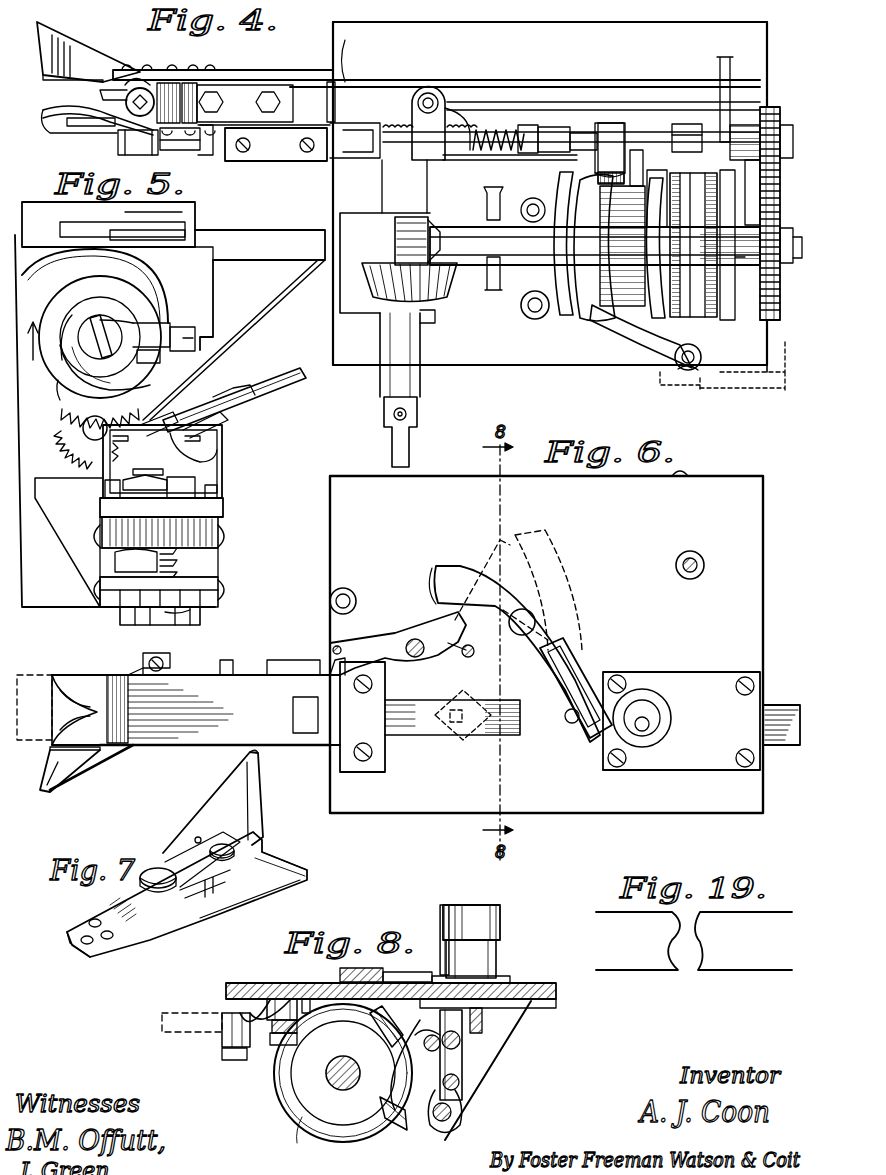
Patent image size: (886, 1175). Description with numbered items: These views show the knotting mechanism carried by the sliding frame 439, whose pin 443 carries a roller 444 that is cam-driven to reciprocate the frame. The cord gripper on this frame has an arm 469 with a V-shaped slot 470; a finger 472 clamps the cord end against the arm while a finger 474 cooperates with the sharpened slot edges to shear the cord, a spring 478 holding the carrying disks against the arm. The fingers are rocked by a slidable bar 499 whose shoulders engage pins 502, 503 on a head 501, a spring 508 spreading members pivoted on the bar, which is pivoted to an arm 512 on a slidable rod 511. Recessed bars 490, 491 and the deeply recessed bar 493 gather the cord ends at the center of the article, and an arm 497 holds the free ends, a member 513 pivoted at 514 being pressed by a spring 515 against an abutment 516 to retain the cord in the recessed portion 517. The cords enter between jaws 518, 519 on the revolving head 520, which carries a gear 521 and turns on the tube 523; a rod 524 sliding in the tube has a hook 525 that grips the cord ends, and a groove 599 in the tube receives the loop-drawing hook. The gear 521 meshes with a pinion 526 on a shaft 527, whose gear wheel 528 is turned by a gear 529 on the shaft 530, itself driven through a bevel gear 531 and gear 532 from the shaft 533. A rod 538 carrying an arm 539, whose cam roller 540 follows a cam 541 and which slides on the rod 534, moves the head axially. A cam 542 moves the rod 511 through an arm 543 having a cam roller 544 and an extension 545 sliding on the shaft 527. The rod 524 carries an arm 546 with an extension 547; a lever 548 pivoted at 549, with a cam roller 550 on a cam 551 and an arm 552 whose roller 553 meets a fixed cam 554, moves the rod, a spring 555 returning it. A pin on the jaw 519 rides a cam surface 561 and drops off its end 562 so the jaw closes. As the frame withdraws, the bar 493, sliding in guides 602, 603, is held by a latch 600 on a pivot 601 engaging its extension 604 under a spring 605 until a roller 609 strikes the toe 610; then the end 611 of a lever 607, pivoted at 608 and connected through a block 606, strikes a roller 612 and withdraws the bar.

In FIG. 4, the frame 439 is at (550, 34).
In FIG. 5, the frame 439 is at (170, 418).
In FIG. 6, the frame 439 is at (565, 644).
In FIG. 8, the frame 439 is at (226, 992).
In FIG. 6, the pin 443 is at (655, 715).
In FIG. 8, the pin 443 is at (497, 962).
In FIG. 6, the roller 444 is at (650, 700).
In FIG. 8, the roller 444 is at (550, 920).
In FIG. 4, the arm 469 is at (190, 84).
In FIG. 5, the V-shaped slot 470 is at (180, 612).
In FIG. 4, the finger 472 is at (118, 92).
In FIG. 5, the finger 472 is at (153, 614).
In FIG. 5, the finger 474 is at (153, 590).
In FIG. 5, the spring 478 is at (177, 568).
In FIG. 19, the bar 490 is at (638, 941).
In FIG. 19, the bar 491 is at (743, 941).
In FIG. 5, the bar 493 is at (195, 228).
In FIG. 6, the bar 493 is at (75, 685).
In FIG. 4, the arm 497 is at (95, 55).
In FIG. 5, the arm 497 is at (278, 382).
In FIG. 6, the arm 497 is at (68, 765).
In FIG. 7, the arm 497 is at (70, 765).
In FIG. 4, the slidable bar 499 is at (363, 95).
In FIG. 5, the head 501 is at (180, 506).
In FIG. 5, the pin 502 is at (223, 497).
In FIG. 5, the pin 503 is at (100, 500).
In FIG. 5, the spring 508 is at (168, 466).
In FIG. 4, the slidable rod 511 is at (395, 135).
In FIG. 8, the slidable rod 511 is at (443, 1130).
In FIG. 4, the arm 512 is at (428, 123).
In FIG. 5, the member 513 is at (225, 415).
In FIG. 7, the member 513 is at (247, 843).
In FIG. 7, the pivot 514 is at (160, 877).
In FIG. 7, the spring 515 is at (183, 865).
In FIG. 5, the abutment 516 is at (222, 450).
In FIG. 7, the abutment 516 is at (240, 877).
In FIG. 7, the recessed portion 517 is at (213, 897).
In FIG. 5, the jaw 518 is at (162, 358).
In FIG. 5, the jaw 519 is at (197, 345).
In FIG. 4, the revolving head 520 is at (120, 140).
In FIG. 5, the revolving head 520 is at (95, 292).
In FIG. 4, the gear 521 is at (170, 145).
In FIG. 4, the tube 523 is at (75, 130).
In FIG. 5, the tube 523 is at (103, 325).
In FIG. 4, the slidable rod 524 is at (580, 133).
In FIG. 8, the slidable rod 524 is at (468, 1040).
In FIG. 5, the hook 525 is at (125, 389).
In FIG. 4, the pinion 526 is at (212, 136).
In FIG. 5, the pinion 526 is at (57, 438).
In FIG. 4, the shaft 527 is at (450, 120).
In FIG. 5, the shaft 527 is at (95, 440).
In FIG. 8, the shaft 527 is at (455, 1118).
In FIG. 4, the gear wheel 528 is at (775, 112).
In FIG. 4, the gear 529 is at (770, 323).
In FIG. 4, the shaft 530 is at (806, 257).
In FIG. 8, the shaft 530 is at (323, 1082).
In FIG. 4, the bevel gear 531 is at (400, 238).
In FIG. 4, the gear 532 is at (388, 266).
In FIG. 4, the shaft 533 is at (420, 375).
In FIG. 4, the rod 534 is at (417, 416).
In FIG. 4, the rod 538 is at (470, 160).
In FIG. 8, the rod 538 is at (383, 1033).
In FIG. 4, the arm 539 is at (615, 137).
In FIG. 8, the arm 539 is at (407, 1060).
In FIG. 4, the cam roller 540 is at (607, 177).
In FIG. 4, the cam 541 is at (610, 235).
In FIG. 4, the cam 542 is at (700, 300).
In FIG. 4, the arm 543 is at (690, 145).
In FIG. 8, the arm 543 is at (410, 1120).
In FIG. 4, the cam roller 544 is at (770, 182).
In FIG. 8, the extension 545 is at (456, 1096).
In FIG. 4, the arm 546 is at (555, 127).
In FIG. 8, the arm 546 is at (460, 1025).
In FIG. 4, the extension 547 is at (530, 125).
In FIG. 8, the extension 547 is at (462, 1068).
In FIG. 4, the lever 548 is at (520, 282).
In FIG. 8, the lever 548 is at (315, 1002).
In FIG. 4, the pivot 549 is at (530, 317).
In FIG. 8, the pivot 549 is at (285, 1048).
In FIG. 4, the cam roller 550 is at (530, 200).
In FIG. 8, the cam roller 550 is at (367, 1027).
In FIG. 4, the cam 551 is at (545, 240).
In FIG. 8, the cam 551 is at (304, 1143).
In FIG. 4, the arm 552 is at (625, 320).
In FIG. 8, the arm 552 is at (230, 1050).
In FIG. 4, the cam roller 553 is at (682, 372).
In FIG. 6, the cam roller 553 is at (683, 468).
In FIG. 8, the cam roller 553 is at (222, 1025).
In FIG. 4, the fixed cam 554 is at (735, 375).
In FIG. 4, the spring 555 is at (470, 120).
In FIG. 5, the cam surface 561 is at (52, 270).
In FIG. 5, the end 562 is at (165, 322).
In FIG. 5, the longitudinal groove 599 is at (83, 362).
In FIG. 6, the latch 600 is at (375, 640).
In FIG. 6, the pivot 601 is at (410, 638).
In FIG. 6, the guide 602 is at (368, 740).
In FIG. 6, the guide 603 is at (672, 760).
In FIG. 6, the lateral extension 604 is at (330, 688).
In FIG. 6, the spring 605 is at (460, 652).
In FIG. 6, the block 606 is at (580, 690).
In FIG. 6, the lever 607 is at (535, 620).
In FIG. 8, the lever 607 is at (430, 970).
In FIG. 6, the pivot 608 is at (530, 625).
In FIG. 8, the pivot 608 is at (393, 962).
In FIG. 6, the roller 609 is at (330, 593).
In FIG. 6, the toe 610 is at (432, 576).
In FIG. 6, the end 611 is at (465, 565).
In FIG. 6, the roller 612 is at (692, 550).